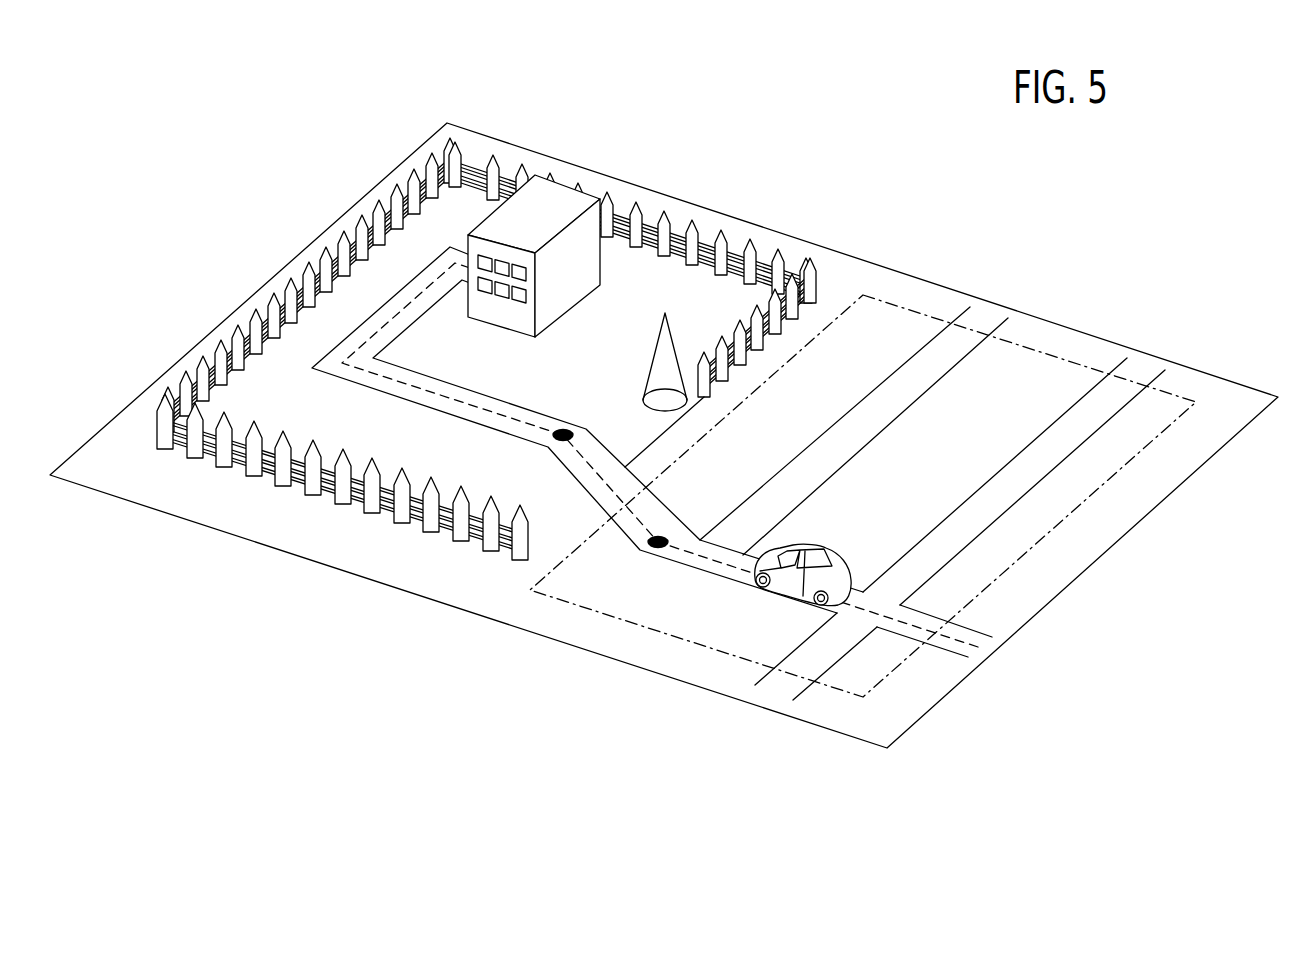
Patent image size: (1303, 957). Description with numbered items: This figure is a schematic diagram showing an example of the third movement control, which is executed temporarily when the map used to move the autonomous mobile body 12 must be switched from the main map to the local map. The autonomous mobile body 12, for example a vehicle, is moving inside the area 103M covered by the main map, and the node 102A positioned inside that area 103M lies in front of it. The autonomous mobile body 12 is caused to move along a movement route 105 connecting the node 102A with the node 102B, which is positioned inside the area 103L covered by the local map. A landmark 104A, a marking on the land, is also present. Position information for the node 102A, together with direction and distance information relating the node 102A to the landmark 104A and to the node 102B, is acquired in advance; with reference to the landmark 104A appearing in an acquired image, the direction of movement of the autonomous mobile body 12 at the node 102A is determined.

The area covered by the local map 103L is at (628, 287).
The landmark 104A is at (670, 337).
The area covered by the main map 103M is at (1040, 353).
The node 102B is at (565, 428).
The node 102A is at (658, 549).
The movement route 105 is at (640, 520).
The autonomous mobile body 12 is at (817, 560).